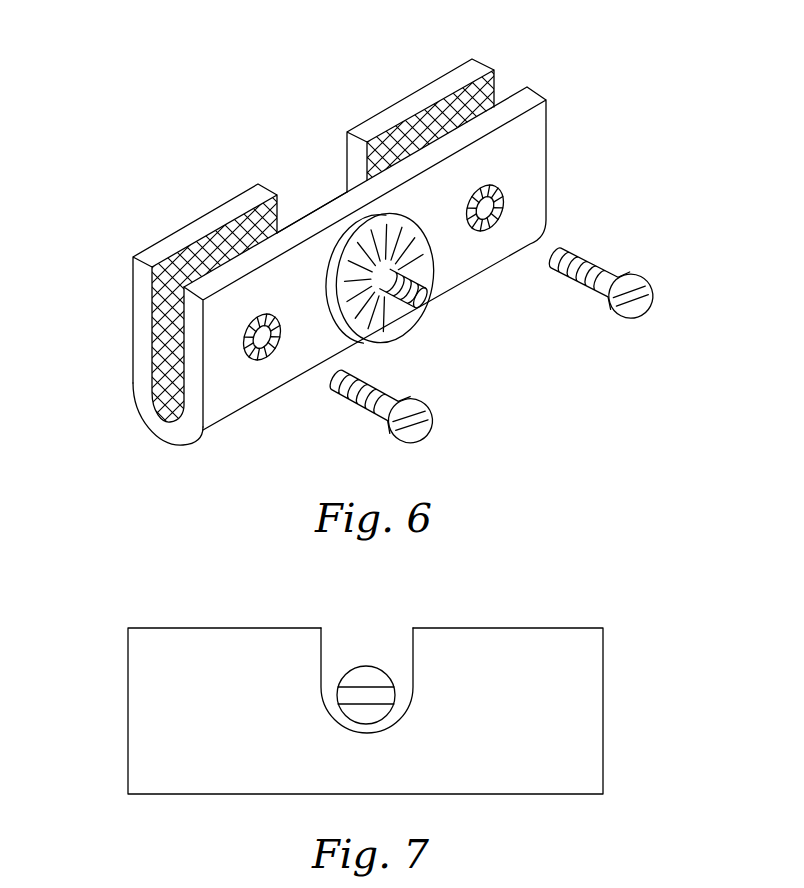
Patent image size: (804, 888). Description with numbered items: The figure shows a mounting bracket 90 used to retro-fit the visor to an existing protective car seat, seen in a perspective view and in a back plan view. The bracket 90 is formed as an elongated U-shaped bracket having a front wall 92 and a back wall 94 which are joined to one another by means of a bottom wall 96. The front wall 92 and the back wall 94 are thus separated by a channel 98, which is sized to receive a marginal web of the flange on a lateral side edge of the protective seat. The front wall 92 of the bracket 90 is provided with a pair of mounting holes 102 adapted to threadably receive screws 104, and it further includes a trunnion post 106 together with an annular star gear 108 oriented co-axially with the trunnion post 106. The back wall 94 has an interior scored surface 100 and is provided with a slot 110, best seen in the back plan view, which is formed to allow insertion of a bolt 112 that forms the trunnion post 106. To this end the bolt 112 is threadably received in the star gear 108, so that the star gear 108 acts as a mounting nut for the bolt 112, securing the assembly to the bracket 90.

In FIG. 7, the bracket 90 is at (408, 717).
In FIG. 6, the front wall 92 is at (523, 147).
In FIG. 6, the back wall 94 is at (160, 327).
In FIG. 7, the back wall 94 is at (583, 700).
In FIG. 6, the bottom wall 96 is at (157, 430).
In FIG. 6, the channel 98 is at (428, 115).
In FIG. 6, the interior scored surface 100 is at (235, 232).
In FIG. 6, the mounting holes 102 is at (498, 203).
In FIG. 6, the screws 104 is at (616, 318).
In FIG. 6, the trunnion post 106 is at (418, 303).
In FIG. 6, the annular star gear 108 is at (370, 333).
In FIG. 6, the slot 110 is at (308, 146).
In FIG. 7, the slot 110 is at (356, 630).
In FIG. 7, the bolt 112 is at (367, 672).